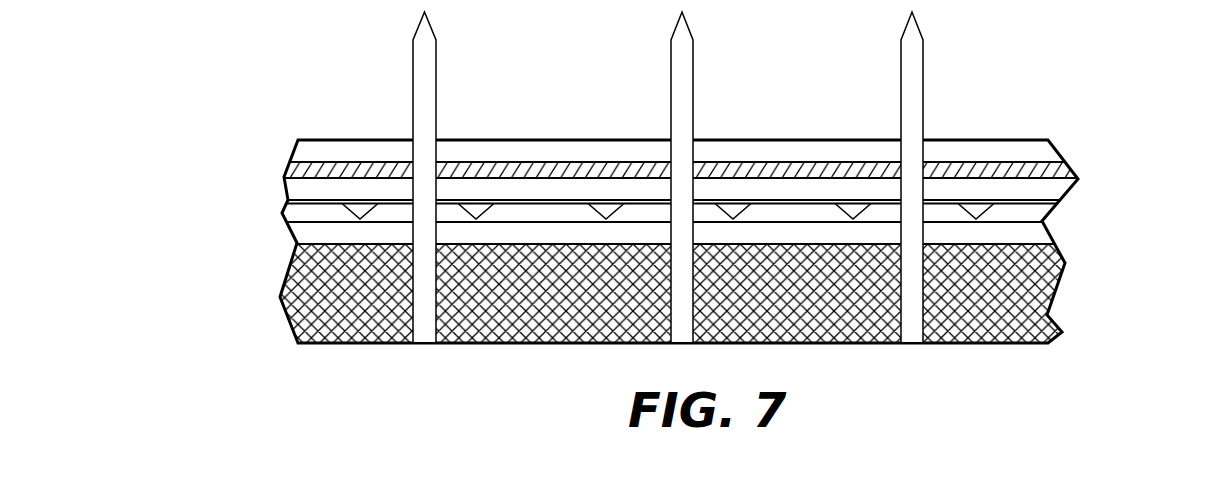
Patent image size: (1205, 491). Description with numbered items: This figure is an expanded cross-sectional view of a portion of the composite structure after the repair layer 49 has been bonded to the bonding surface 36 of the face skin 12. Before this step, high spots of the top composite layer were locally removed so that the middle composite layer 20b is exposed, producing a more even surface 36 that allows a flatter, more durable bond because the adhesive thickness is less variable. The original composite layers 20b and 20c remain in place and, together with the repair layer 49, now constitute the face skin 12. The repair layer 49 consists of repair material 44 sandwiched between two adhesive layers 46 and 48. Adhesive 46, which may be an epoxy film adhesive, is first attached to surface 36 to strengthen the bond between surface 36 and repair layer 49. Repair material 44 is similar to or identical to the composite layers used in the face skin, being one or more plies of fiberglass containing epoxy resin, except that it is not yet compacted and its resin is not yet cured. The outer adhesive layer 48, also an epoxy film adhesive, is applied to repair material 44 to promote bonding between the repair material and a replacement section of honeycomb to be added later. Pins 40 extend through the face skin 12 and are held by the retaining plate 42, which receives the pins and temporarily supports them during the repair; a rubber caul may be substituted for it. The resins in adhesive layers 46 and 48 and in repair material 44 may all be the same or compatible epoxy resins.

The face skin 12 is at (217, 140).
The middle composite layer 20b is at (290, 212).
The bottom composite layer 20c is at (296, 233).
The bonding surface 36 is at (789, 204).
The pins 40 is at (422, 330).
The retaining plate 42 is at (1035, 291).
The repair material 44 is at (1060, 170).
The adhesive layer 46 is at (1052, 192).
The adhesive layer 48 is at (995, 152).
The repair layer 49 is at (1160, 140).